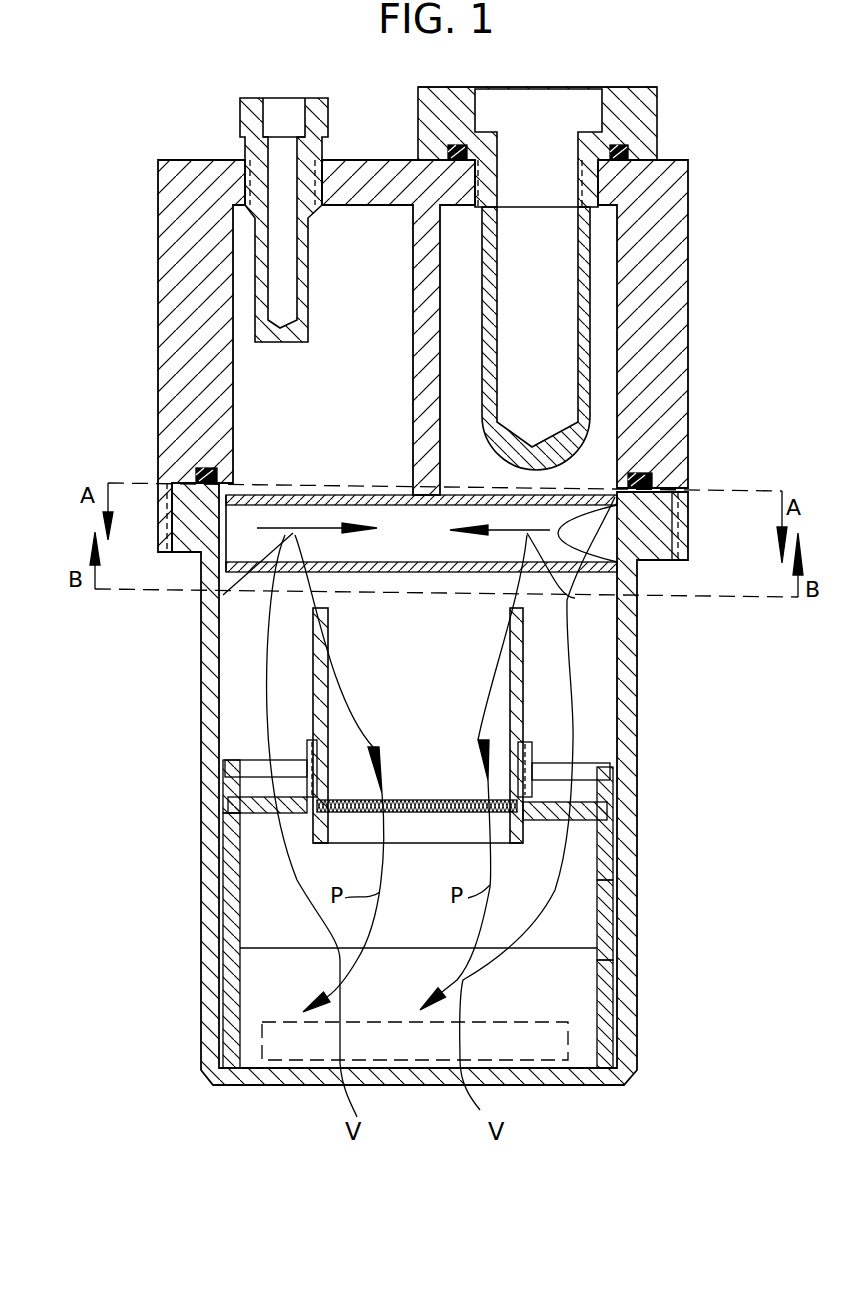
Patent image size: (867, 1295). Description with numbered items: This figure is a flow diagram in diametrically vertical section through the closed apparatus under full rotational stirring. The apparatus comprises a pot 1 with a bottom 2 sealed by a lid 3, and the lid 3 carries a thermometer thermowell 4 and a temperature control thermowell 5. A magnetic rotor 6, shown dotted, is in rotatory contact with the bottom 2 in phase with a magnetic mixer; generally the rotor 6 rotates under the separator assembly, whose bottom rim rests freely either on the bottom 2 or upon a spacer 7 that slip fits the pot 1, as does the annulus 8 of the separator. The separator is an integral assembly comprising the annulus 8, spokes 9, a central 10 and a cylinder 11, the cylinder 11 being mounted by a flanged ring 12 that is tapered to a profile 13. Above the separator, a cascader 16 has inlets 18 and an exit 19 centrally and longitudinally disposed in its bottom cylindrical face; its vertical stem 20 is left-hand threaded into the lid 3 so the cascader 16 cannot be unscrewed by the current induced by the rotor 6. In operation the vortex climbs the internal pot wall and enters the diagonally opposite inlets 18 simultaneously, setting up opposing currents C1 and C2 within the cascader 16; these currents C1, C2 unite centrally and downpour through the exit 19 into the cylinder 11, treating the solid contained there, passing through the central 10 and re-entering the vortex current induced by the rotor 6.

The pot 1 is at (630, 885).
The bottom 2 is at (603, 1085).
The lid 3 is at (183, 182).
The thermometer thermowell 4 is at (268, 108).
The temperature control thermowell 5 is at (647, 115).
The magnetic rotor 6 is at (555, 1050).
The spacer 7 is at (605, 1000).
The annulus 8 is at (607, 937).
The spokes 9 is at (240, 782).
The central 10 is at (423, 800).
The cylinder 11 is at (518, 692).
The flanged ring 12 is at (530, 830).
The profile 13 is at (530, 830).
The cascader 16 is at (560, 500).
The inlets 18 is at (600, 533).
The exit 19 is at (395, 563).
The vertical stem 20 is at (417, 188).
The current C1 is at (223, 595).
The current C2 is at (575, 598).